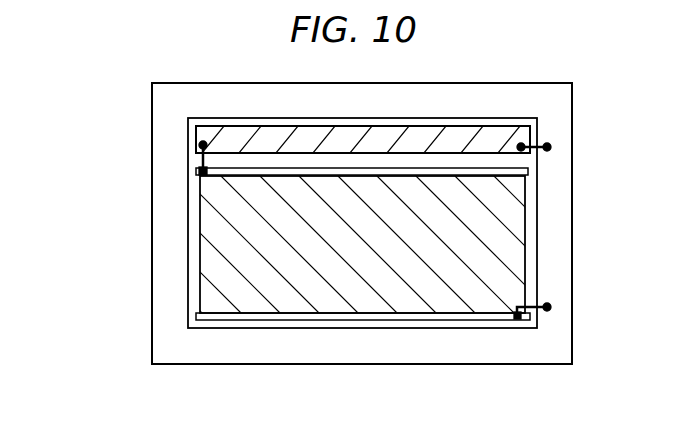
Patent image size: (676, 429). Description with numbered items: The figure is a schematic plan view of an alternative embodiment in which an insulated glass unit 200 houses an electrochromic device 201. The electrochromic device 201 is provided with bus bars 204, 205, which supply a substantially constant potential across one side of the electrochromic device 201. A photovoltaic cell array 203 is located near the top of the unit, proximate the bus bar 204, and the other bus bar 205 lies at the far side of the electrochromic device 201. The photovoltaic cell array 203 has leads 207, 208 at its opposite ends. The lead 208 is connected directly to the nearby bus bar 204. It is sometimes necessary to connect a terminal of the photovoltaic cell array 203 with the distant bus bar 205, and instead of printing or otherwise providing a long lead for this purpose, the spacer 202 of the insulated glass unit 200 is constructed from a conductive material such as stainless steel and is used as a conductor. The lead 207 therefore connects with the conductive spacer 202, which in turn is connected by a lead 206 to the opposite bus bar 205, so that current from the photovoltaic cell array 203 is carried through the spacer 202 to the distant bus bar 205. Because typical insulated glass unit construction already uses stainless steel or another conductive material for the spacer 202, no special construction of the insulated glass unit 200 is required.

The insulated glass unit 200 is at (108, 54).
The electrochromic device 201 is at (213, 229).
The spacer 202 is at (172, 303).
The photovoltaic cell array 203 is at (506, 142).
The bus bar 204 is at (518, 170).
The bus bar 205 is at (452, 318).
The lead 206 is at (532, 307).
The lead 207 is at (546, 147).
The lead 208 is at (202, 165).